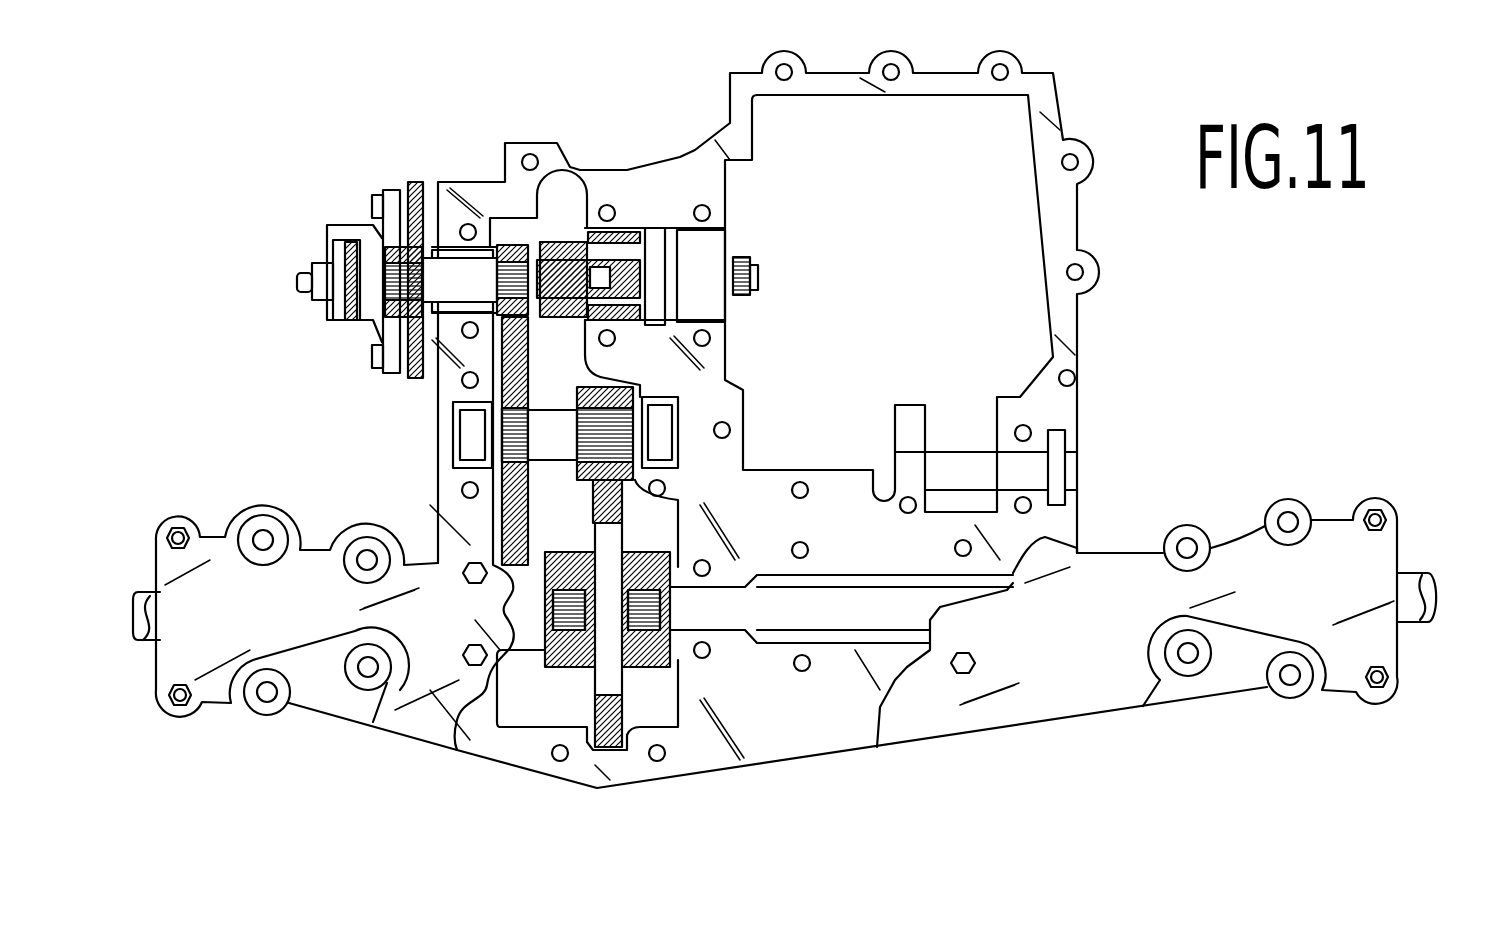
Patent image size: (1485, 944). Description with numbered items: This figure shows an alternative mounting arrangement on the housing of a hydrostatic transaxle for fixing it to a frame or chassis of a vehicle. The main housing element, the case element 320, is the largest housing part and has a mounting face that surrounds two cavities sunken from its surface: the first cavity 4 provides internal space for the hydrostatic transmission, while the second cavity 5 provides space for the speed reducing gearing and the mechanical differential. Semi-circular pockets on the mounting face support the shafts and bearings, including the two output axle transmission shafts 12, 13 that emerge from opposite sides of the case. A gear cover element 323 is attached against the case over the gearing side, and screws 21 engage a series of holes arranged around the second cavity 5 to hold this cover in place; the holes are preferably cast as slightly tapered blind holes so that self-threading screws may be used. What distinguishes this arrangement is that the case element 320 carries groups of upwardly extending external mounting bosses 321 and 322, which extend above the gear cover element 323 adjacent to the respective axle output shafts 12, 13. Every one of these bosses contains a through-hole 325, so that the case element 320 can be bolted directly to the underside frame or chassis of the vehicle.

The first cavity 4 is at (892, 287).
The second cavity 5 is at (568, 366).
The output axle transmission shaft 12 is at (150, 603).
The output axle transmission shaft 13 is at (1430, 605).
The screws 21 is at (178, 530).
The case element 320 is at (632, 218).
The external mounting bosses 321 is at (300, 548).
The external mounting bosses 322 is at (1170, 524).
The gear cover element 323 is at (201, 626).
The through-hole 325 is at (263, 540).